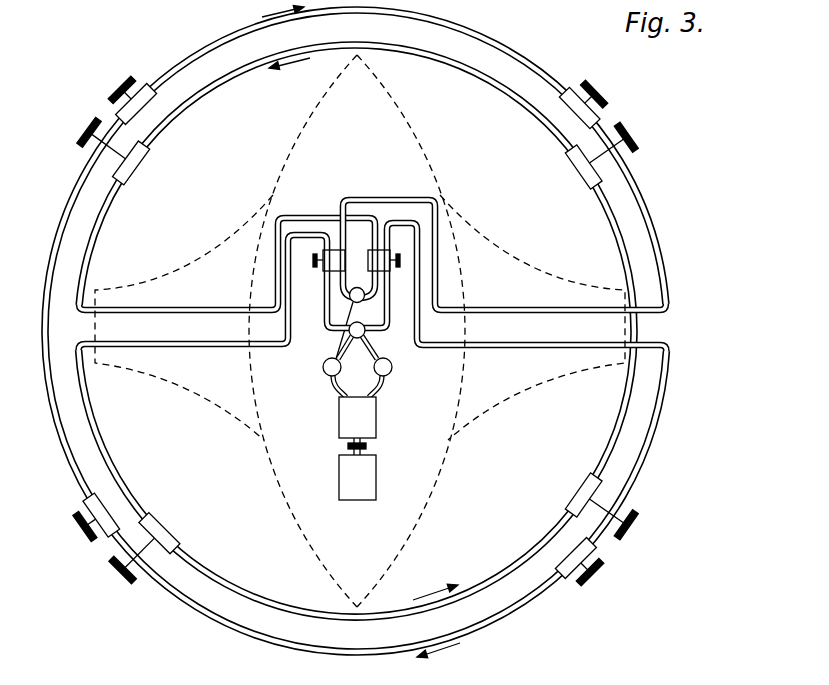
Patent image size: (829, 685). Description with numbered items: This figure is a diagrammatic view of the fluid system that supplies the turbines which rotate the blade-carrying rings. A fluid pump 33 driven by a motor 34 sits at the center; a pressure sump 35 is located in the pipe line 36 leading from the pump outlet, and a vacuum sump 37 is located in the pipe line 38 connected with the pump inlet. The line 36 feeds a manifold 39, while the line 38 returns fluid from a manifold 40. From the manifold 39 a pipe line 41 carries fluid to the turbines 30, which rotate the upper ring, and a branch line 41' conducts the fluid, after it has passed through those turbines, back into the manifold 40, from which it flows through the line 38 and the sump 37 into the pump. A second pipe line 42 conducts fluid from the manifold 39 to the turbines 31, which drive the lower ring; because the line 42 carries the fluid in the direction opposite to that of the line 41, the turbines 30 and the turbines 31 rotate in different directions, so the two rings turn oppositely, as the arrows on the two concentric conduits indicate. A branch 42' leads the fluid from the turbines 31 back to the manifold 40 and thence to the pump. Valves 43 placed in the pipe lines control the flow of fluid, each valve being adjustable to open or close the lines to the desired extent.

The turbines 30 is at (149, 85).
The turbines 31 is at (140, 167).
The fluid pump 33 is at (364, 419).
The motor 34 is at (363, 482).
The pressure sump 35 is at (391, 372).
The pipe line 36 is at (376, 350).
The vacuum sump 37 is at (324, 365).
The pipe line 38 is at (344, 336).
The manifold 39 is at (366, 332).
The manifold 40 is at (388, 255).
The pipe line 41 is at (526, 303).
The branch line 41' is at (553, 296).
The pipe line 42 is at (233, 308).
The branch 42' is at (227, 264).
The valves 43 is at (336, 250).